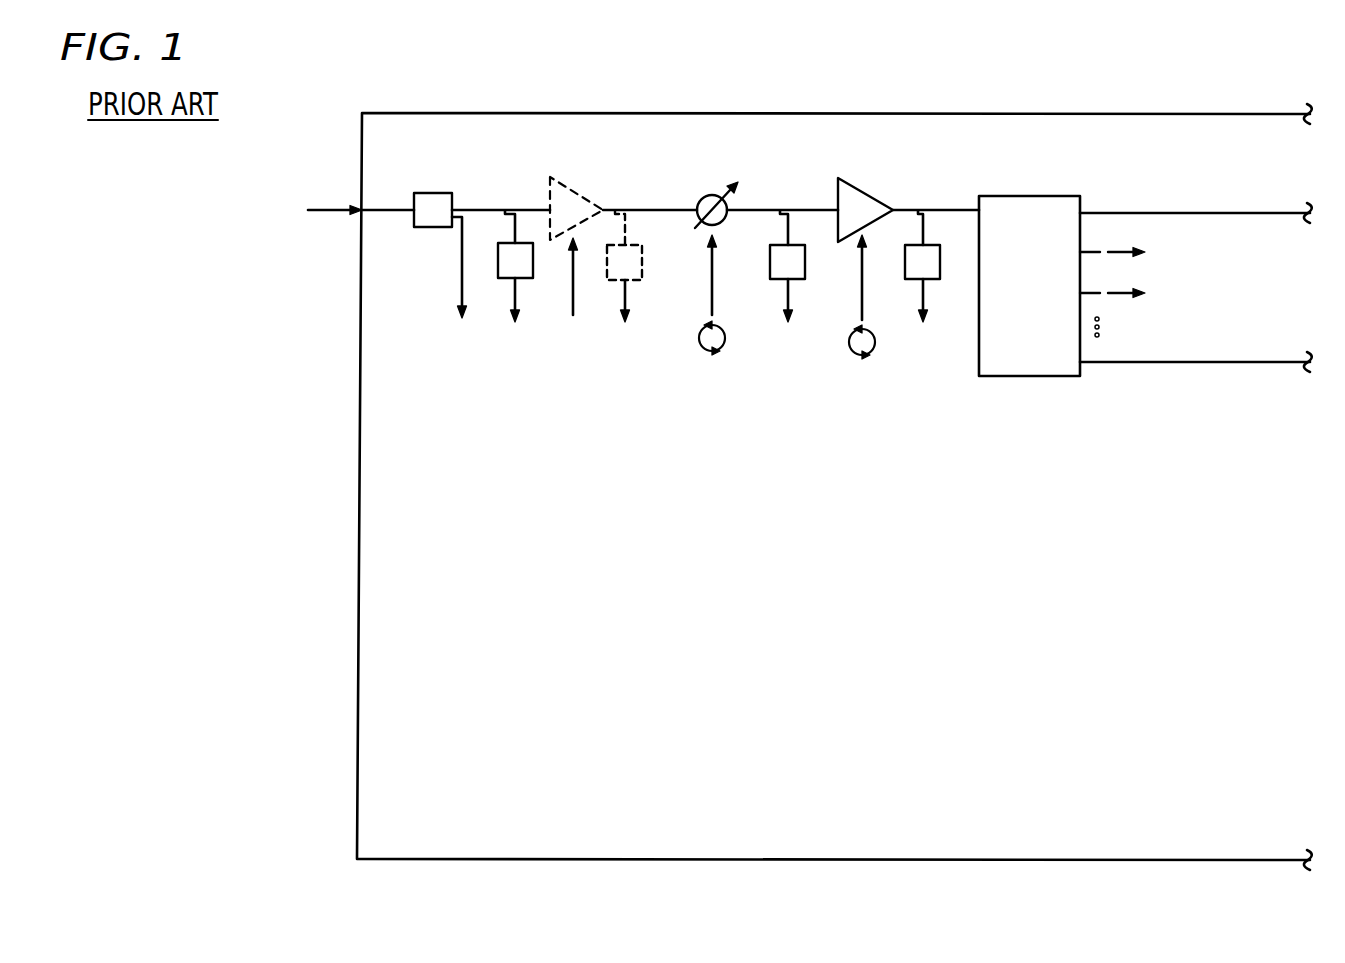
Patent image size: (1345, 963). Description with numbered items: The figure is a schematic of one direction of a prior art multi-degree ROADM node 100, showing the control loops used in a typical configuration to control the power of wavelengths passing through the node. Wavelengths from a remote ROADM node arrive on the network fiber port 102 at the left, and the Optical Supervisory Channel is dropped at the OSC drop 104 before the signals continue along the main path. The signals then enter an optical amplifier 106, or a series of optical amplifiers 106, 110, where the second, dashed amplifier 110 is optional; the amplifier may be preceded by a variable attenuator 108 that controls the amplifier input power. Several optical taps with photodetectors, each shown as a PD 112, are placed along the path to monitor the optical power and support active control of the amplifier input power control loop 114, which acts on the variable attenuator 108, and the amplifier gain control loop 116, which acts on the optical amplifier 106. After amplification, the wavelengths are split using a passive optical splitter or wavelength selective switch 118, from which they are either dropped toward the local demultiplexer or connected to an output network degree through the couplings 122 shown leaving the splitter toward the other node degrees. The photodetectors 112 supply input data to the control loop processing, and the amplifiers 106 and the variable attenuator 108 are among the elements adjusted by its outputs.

The ROADM node 100 is at (300, 58).
The network fiber port 102 is at (227, 235).
The Optical Supervisory Channel drop 104 is at (434, 193).
The optical amplifier 106 is at (870, 195).
The variable attenuator 108 is at (715, 190).
The optical amplifier 110 is at (581, 193).
The photodetector 112 is at (612, 279).
The amplifier input power control loop 114 is at (725, 339).
The amplifier gain control loop 116 is at (875, 343).
The passive optical splitter or wavelength selective switch 118 is at (1034, 196).
The couplings to output network degrees 122 is at (1233, 274).